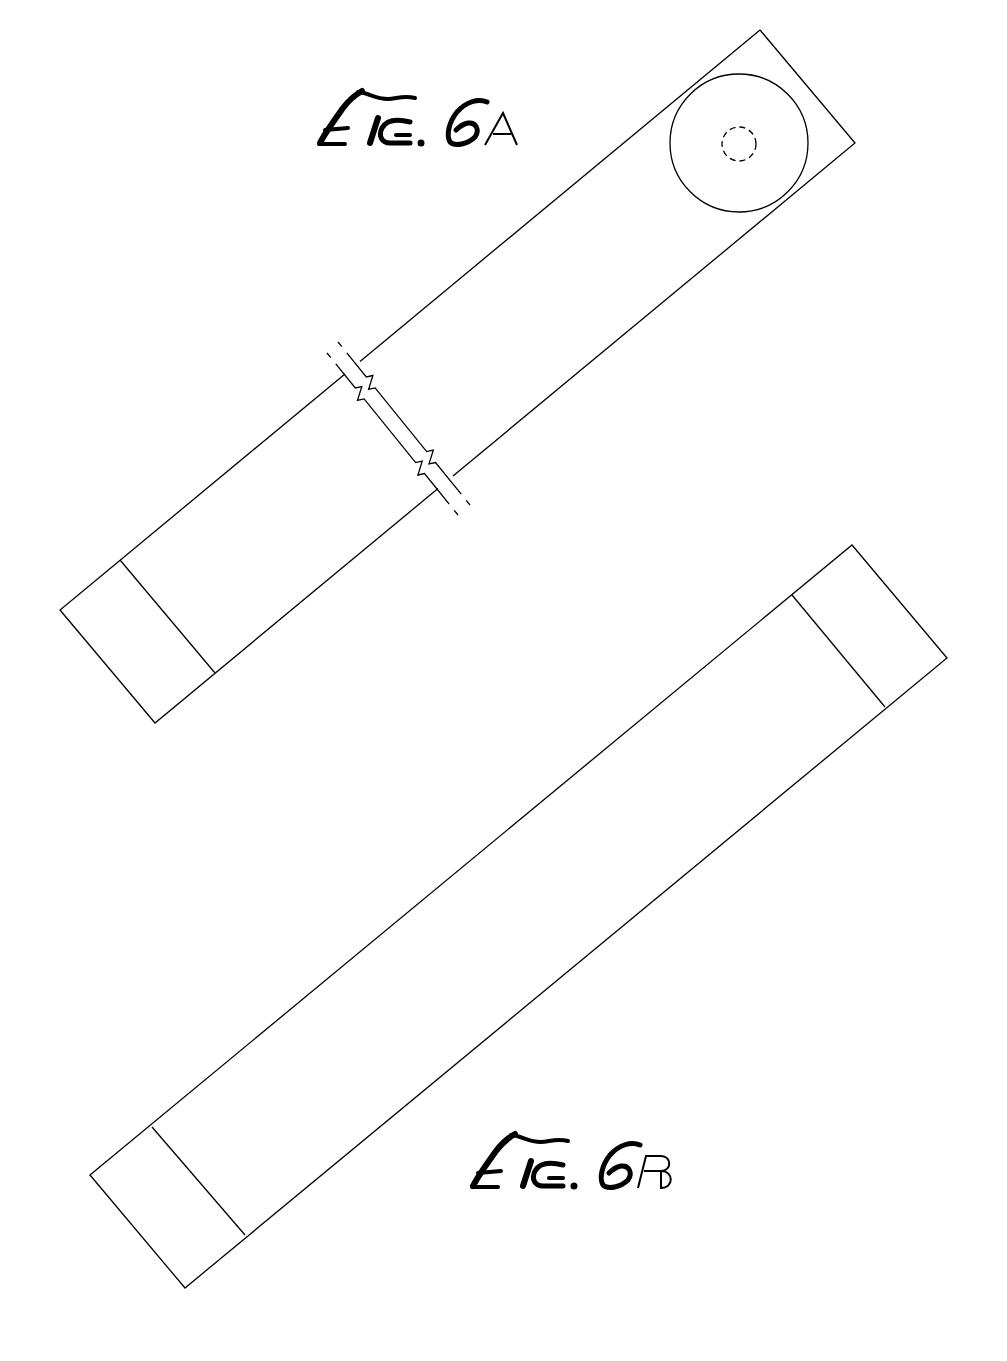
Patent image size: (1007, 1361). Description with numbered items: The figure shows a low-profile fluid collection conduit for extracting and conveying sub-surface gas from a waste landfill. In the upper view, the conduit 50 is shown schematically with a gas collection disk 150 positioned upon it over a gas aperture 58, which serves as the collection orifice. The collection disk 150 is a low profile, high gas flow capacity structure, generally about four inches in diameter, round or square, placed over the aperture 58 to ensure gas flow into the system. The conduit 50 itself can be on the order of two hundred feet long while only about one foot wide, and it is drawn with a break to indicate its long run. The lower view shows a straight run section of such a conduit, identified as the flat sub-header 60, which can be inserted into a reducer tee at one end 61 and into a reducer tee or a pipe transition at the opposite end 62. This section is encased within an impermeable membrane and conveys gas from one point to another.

In FIG. 6A, the conduit 50 is at (412, 294).
In FIG. 6A, the gas aperture 58 is at (722, 135).
In FIG. 6A, the gas collection disk 150 is at (777, 115).
In FIG. 6B, the tube 60 is at (590, 977).
In FIG. 6B, the end 61 is at (822, 552).
In FIG. 6B, the opposite end 62 is at (100, 1147).